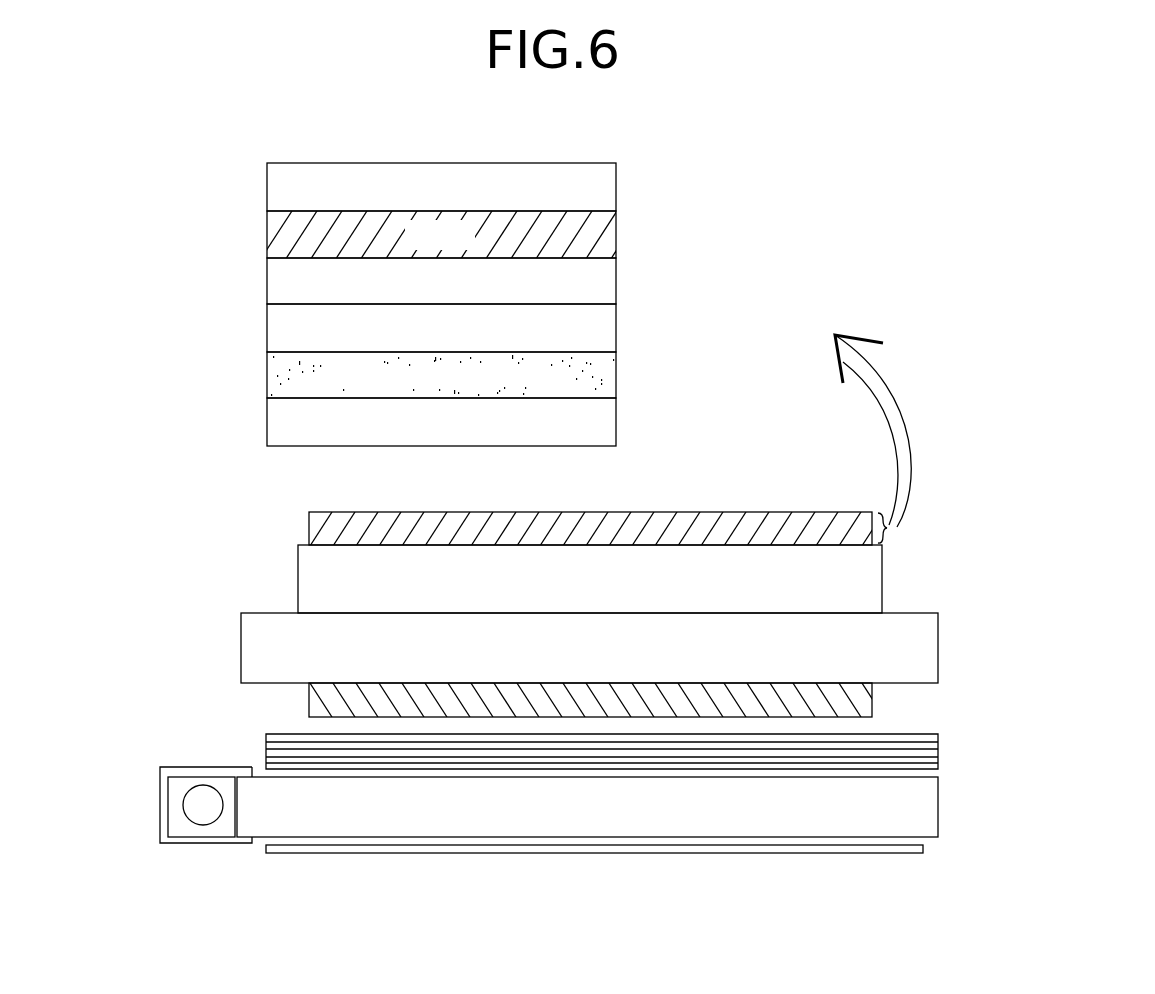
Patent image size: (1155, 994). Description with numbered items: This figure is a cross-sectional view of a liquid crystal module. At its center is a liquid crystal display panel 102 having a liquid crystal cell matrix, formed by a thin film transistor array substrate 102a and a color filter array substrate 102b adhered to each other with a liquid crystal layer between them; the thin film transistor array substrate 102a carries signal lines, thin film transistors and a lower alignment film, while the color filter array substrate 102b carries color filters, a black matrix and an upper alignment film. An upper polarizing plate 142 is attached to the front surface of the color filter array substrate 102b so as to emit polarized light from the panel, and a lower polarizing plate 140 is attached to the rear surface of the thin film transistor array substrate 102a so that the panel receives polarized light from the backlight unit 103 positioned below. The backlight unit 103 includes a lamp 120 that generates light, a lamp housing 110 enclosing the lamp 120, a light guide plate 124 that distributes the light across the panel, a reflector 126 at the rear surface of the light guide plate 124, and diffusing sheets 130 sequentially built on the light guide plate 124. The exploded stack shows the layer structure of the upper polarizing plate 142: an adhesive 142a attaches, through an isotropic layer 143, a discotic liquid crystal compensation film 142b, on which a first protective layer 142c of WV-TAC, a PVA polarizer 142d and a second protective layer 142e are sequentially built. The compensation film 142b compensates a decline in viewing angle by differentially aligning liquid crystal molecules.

The liquid crystal display panel 102 is at (512, 614).
The thin film transistor array substrate 102a is at (258, 650).
The color filter array substrate 102b is at (325, 583).
The backlight unit 103 is at (632, 817).
The lamp housing 110 is at (165, 841).
The lamp 120 is at (201, 791).
The light guide plate 124 is at (895, 820).
The reflector 126 is at (367, 853).
The diffusing sheets 130 is at (952, 735).
The lower polarizing plate 140 is at (327, 693).
The upper polarizing plate 142 is at (745, 180).
The adhesive 142a is at (616, 423).
The compensation film 142b is at (616, 327).
The first protective layer 142c is at (616, 282).
The polarizer 142d is at (616, 233).
The second protective layer 142e is at (616, 185).
The isotropic layer 143 is at (616, 377).